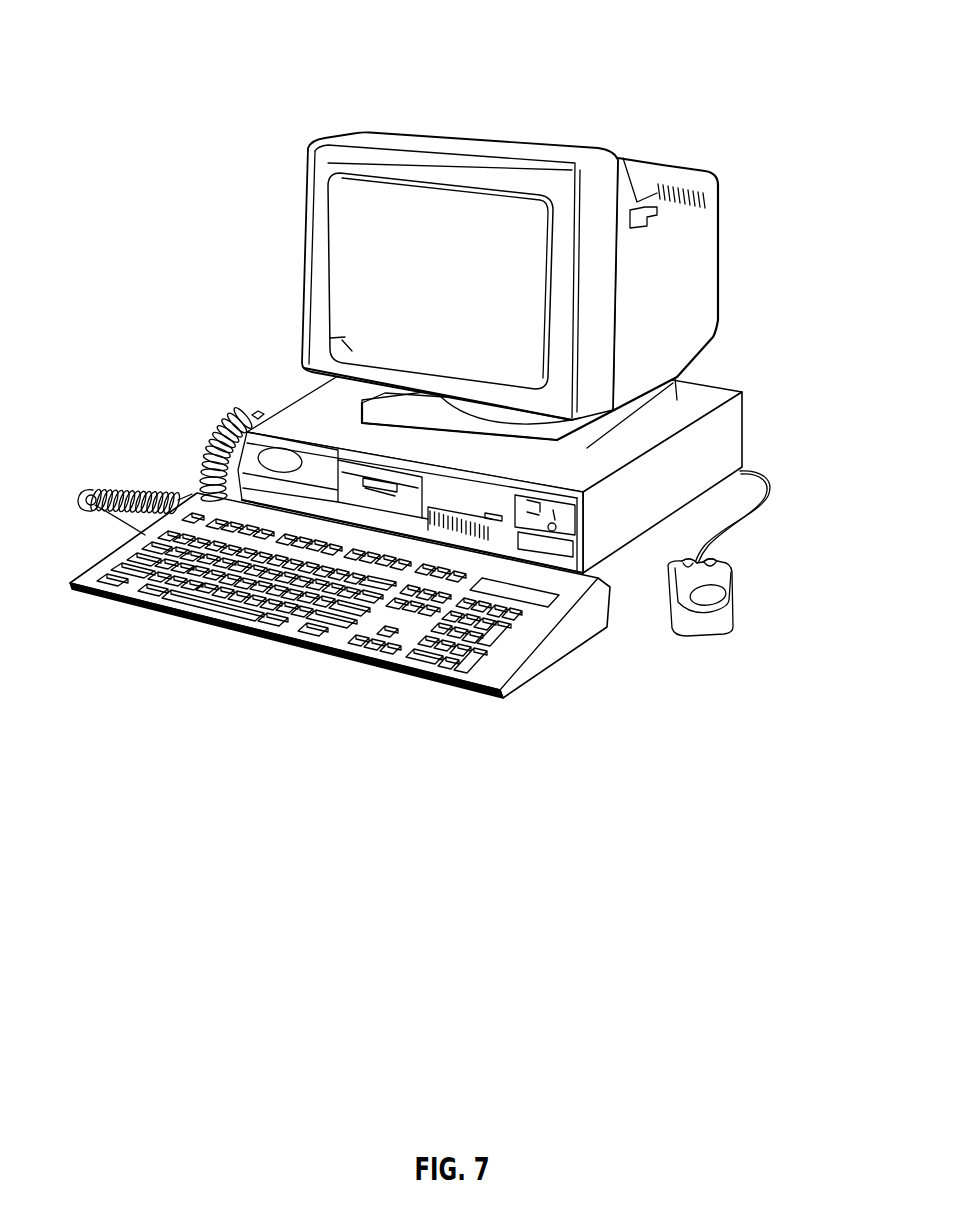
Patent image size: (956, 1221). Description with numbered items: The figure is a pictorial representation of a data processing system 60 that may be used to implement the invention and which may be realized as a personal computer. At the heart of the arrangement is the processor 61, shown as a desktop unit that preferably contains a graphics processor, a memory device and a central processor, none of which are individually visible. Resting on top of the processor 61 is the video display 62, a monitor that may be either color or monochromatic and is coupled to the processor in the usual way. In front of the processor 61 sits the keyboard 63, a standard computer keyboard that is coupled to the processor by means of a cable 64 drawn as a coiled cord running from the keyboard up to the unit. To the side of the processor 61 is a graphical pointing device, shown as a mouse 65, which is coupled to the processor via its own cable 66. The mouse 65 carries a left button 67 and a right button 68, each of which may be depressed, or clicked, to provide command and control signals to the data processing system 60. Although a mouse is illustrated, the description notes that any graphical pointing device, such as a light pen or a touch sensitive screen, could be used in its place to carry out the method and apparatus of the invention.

The data processing system 60 is at (611, 105).
The processor 61 is at (732, 425).
The video display 62 is at (303, 268).
The keyboard 63 is at (337, 663).
The cable 64 is at (207, 432).
The mouse 65 is at (717, 627).
The cable 66 is at (745, 517).
The left button 67 is at (673, 570).
The right button 68 is at (720, 567).